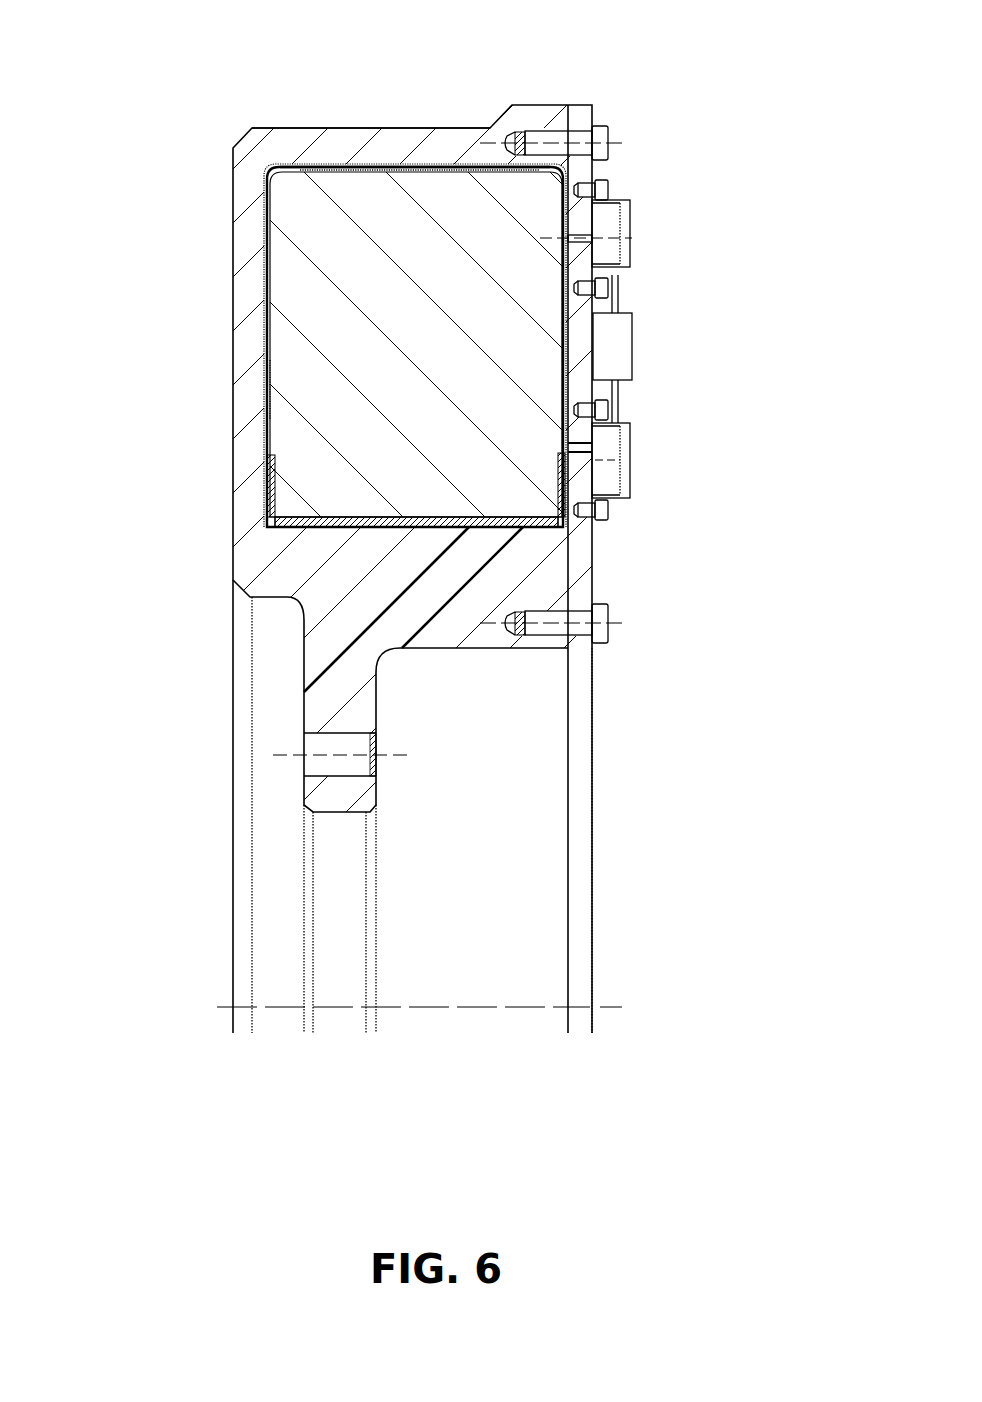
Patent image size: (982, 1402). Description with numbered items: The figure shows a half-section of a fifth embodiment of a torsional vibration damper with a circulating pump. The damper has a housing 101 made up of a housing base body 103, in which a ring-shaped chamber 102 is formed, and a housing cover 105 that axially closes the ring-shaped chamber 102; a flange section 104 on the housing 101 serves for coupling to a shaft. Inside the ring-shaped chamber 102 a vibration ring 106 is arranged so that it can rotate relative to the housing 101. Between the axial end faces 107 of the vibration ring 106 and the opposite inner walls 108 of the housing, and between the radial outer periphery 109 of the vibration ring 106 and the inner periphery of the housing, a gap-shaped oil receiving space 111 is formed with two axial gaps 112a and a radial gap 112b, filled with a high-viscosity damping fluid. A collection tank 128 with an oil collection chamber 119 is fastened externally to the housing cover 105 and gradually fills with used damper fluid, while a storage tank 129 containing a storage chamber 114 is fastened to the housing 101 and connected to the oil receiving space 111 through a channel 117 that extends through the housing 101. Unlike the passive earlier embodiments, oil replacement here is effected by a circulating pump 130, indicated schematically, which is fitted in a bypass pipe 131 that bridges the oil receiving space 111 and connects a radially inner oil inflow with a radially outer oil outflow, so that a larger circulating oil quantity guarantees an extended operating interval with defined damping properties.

The housing 101 is at (250, 145).
The ring-shaped chamber 102 is at (270, 212).
The housing base body 103 is at (292, 140).
The flange section 104 is at (330, 703).
The housing cover 105 is at (580, 117).
The vibration ring 106 is at (340, 263).
The axial end faces 107 is at (265, 291).
The inner walls 108 is at (265, 332).
The radial outer periphery 109 is at (368, 167).
The oil receiving space 111 is at (265, 428).
The axial gaps 112a is at (265, 378).
The radial gap 112b is at (437, 167).
The storage chamber 114 is at (610, 453).
The channel 117 is at (588, 443).
The oil collection chamber 119 is at (610, 218).
The collection tank 128 is at (628, 225).
The storage tank 129 is at (622, 470).
The circulating pump 130 is at (630, 350).
The bypass pipe 131 is at (615, 295).